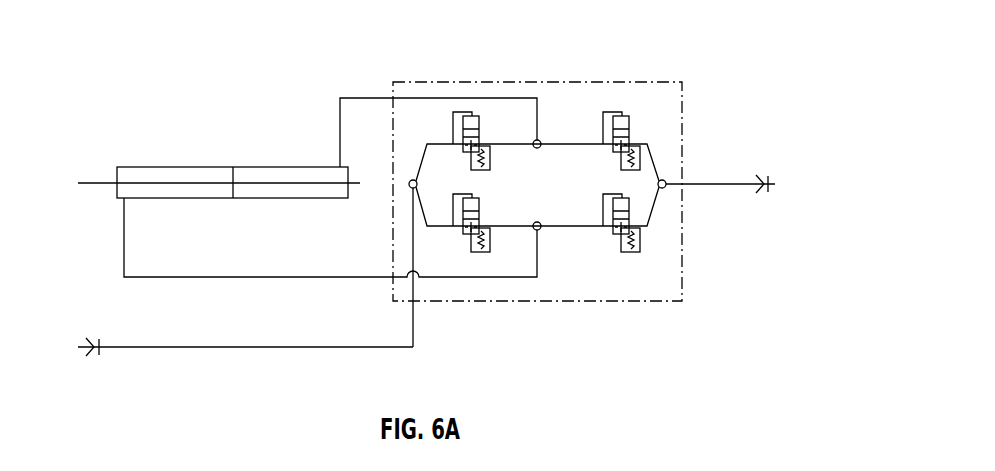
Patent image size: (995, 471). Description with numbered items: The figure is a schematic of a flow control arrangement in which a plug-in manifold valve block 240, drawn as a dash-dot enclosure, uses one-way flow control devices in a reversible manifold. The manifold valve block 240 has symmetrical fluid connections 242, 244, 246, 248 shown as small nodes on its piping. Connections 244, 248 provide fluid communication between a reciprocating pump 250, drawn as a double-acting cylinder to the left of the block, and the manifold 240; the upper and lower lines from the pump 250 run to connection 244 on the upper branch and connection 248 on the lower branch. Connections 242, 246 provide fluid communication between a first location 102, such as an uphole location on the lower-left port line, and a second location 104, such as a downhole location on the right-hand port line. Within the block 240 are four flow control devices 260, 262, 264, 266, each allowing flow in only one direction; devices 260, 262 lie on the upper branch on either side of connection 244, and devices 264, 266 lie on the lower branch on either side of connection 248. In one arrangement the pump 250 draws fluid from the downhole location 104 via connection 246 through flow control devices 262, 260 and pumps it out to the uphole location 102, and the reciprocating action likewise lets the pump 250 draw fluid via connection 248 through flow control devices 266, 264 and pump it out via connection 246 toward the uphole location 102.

The first location 102 is at (90, 331).
The second location 104 is at (757, 205).
The manifold valve block 240 is at (720, 41).
The fluid connection 242 is at (410, 188).
The fluid connection 244 is at (540, 148).
The fluid connection 246 is at (664, 188).
The fluid connection 248 is at (540, 222).
The reciprocating pump 250 is at (251, 167).
The flow control device 260 is at (464, 113).
The flow control device 262 is at (614, 113).
The flow control device 264 is at (477, 252).
The flow control device 266 is at (641, 241).